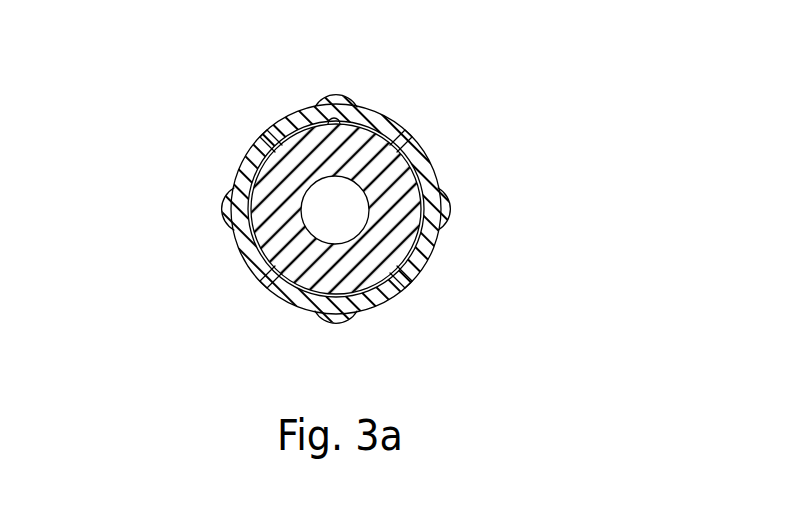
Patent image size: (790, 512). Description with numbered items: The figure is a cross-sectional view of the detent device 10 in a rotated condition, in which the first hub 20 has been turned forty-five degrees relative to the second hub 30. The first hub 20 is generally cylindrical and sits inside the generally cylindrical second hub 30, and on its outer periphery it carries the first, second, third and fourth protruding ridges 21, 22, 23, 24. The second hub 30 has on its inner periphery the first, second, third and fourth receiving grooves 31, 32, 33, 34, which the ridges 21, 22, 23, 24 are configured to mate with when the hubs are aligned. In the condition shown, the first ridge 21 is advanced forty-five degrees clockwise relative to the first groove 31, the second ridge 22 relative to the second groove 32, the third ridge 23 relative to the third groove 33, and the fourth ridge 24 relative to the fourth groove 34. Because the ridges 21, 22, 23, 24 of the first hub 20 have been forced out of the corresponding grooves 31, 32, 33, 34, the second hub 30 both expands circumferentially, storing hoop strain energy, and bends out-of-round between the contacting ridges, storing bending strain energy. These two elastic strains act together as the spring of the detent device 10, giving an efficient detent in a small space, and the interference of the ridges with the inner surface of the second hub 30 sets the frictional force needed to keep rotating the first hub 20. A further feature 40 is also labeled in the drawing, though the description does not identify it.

The detent device 10 is at (200, 146).
The first hub 20 is at (297, 149).
The first protruding ridge 21 is at (400, 142).
The second protruding ridge 22 is at (410, 277).
The third protruding ridge 23 is at (273, 273).
The fourth protruding ridge 24 is at (265, 143).
The second hub 30 is at (427, 251).
The first receiving groove 31 is at (334, 120).
The second receiving groove 32 is at (422, 211).
The third receiving groove 33 is at (335, 298).
The fourth receiving groove 34 is at (226, 210).
The recess 40 is at (353, 120).